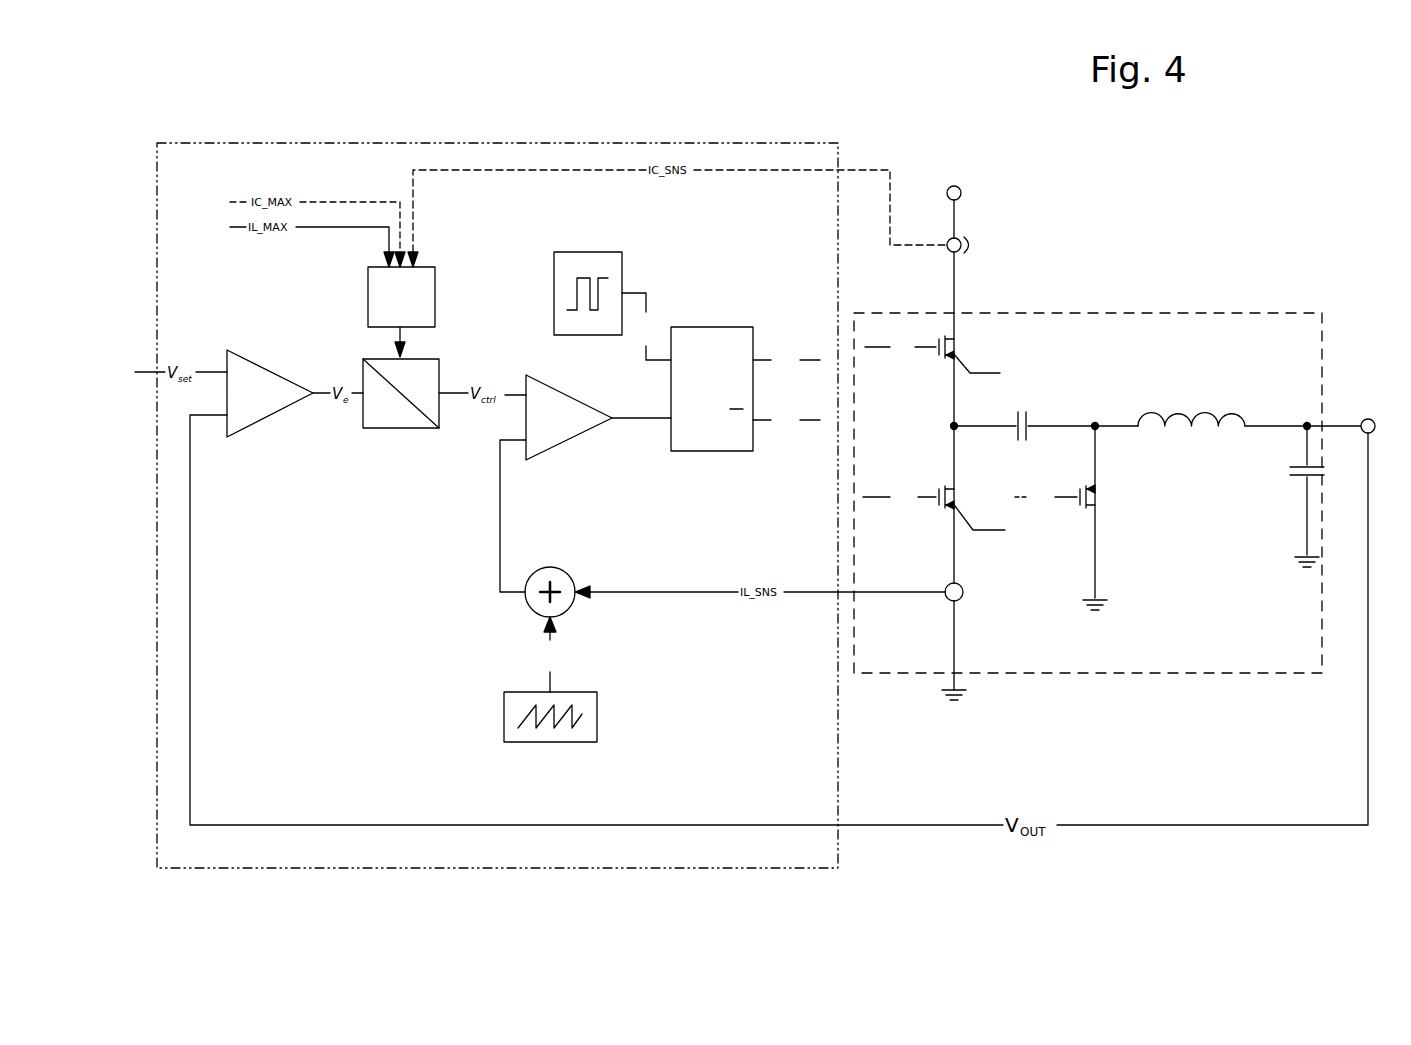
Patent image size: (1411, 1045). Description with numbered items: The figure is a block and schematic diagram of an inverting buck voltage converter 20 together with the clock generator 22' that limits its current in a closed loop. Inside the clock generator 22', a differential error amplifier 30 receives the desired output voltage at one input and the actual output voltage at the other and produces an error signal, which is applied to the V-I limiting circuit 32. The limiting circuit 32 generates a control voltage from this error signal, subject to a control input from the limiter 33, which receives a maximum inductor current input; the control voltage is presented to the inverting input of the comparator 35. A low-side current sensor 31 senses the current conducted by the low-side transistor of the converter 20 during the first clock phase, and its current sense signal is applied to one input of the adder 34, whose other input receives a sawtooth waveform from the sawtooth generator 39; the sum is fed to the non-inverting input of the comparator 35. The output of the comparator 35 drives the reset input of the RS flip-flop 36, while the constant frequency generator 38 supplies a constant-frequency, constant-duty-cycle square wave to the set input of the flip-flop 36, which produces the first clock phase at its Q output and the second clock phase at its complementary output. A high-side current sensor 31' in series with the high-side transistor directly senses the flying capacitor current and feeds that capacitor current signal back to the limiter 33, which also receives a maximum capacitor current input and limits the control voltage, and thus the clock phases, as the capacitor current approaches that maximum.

The clock generator 22' is at (497, 479).
The inverting buck converter 20 is at (1133, 313).
The differential error amplifier 30 is at (283, 370).
The V-I limiting circuit 32 is at (405, 428).
The limiter 33 is at (368, 296).
The adder 34 is at (565, 568).
The comparator 35 is at (565, 443).
The RS flip-flop 36 is at (730, 327).
The constant frequency generator 38 is at (622, 272).
The ramp generator 39 is at (597, 712).
The low-side current sensor 31 is at (930, 582).
The high-side current sensor 31' is at (986, 255).